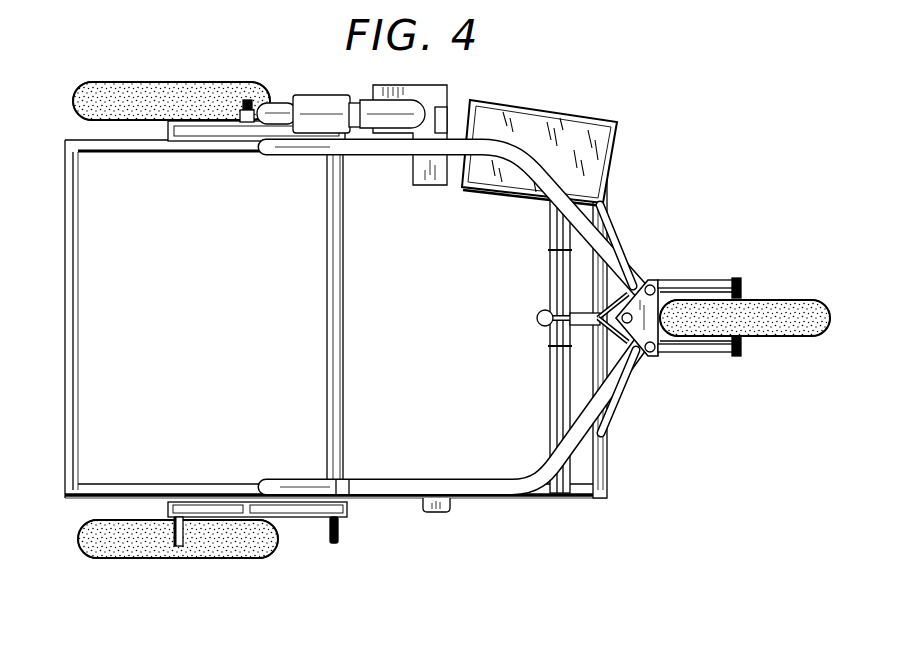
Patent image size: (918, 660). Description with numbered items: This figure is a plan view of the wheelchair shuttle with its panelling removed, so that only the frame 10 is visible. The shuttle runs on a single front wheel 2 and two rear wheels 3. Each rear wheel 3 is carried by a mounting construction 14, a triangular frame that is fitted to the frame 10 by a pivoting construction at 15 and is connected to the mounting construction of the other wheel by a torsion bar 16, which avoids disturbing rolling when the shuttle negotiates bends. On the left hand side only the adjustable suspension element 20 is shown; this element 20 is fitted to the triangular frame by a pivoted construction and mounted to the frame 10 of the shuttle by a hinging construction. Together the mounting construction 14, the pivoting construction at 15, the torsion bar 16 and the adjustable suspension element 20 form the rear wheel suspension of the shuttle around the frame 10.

The front wheel 2 is at (768, 300).
The rear wheels 3 is at (73, 102).
The frame 10 is at (538, 200).
The mounting construction 14 is at (223, 141).
The pivoting construction 15 is at (342, 523).
The torsion bar 16 is at (345, 418).
The adjustable suspension element 20 is at (357, 104).